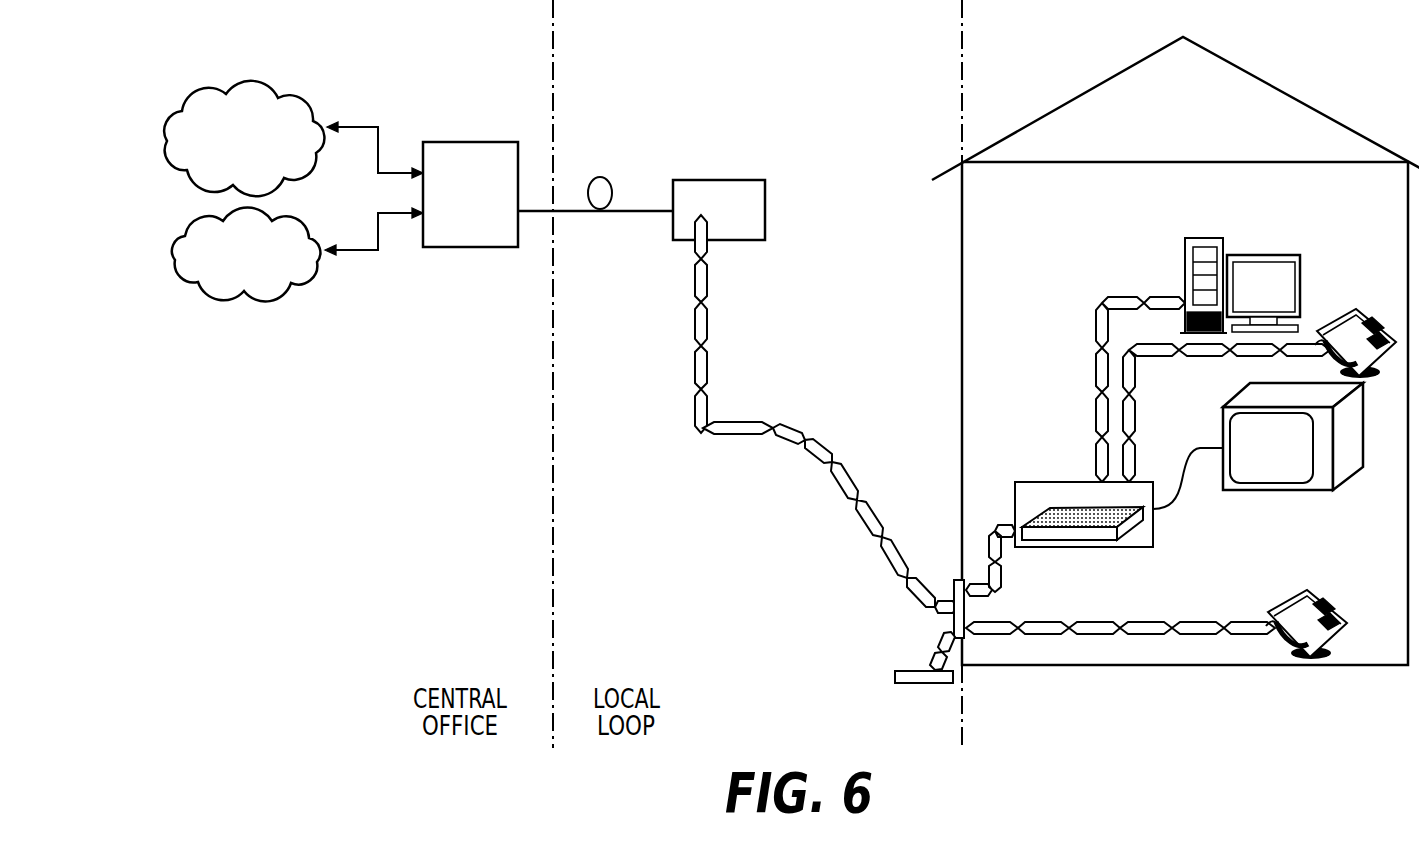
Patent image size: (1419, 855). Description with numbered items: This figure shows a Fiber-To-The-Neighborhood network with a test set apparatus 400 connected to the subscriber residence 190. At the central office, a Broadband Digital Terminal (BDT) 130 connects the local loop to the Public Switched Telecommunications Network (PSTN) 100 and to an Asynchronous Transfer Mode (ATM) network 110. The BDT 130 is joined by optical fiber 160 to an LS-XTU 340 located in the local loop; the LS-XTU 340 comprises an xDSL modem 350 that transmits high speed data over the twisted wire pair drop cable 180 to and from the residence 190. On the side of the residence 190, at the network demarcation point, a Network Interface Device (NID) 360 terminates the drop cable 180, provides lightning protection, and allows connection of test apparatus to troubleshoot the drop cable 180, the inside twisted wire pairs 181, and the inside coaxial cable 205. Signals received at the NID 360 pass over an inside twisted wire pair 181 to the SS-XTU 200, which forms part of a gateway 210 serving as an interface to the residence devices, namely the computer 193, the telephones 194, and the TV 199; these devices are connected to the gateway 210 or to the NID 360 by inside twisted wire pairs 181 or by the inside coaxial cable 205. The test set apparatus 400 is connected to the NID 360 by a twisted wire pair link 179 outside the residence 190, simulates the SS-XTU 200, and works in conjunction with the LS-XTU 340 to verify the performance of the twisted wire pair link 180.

The Public Switched Telecommunications Network 100 is at (208, 297).
The Asynchronous Transfer Mode network 110 is at (200, 93).
The Broadband Digital Terminal 130 is at (476, 248).
The optical fiber 160 is at (633, 205).
The twisted wire pair link 179 is at (950, 627).
The twisted wire pair drop cable 180 is at (695, 378).
The inside twisted wire pairs 181 is at (1123, 372).
The residence 190 is at (1323, 665).
The computer 193 is at (1250, 217).
The telephone 194 is at (1370, 318).
The television 199 is at (1250, 492).
The SS-XTU 200 is at (1045, 507).
The inside coaxial cable 205 is at (1183, 470).
The gateway 210 is at (1123, 547).
The LS-XTU 340 is at (765, 210).
The xDSL modem 350 is at (693, 245).
The Network Interface Device 360 is at (955, 580).
The test set apparatus 400 is at (895, 677).